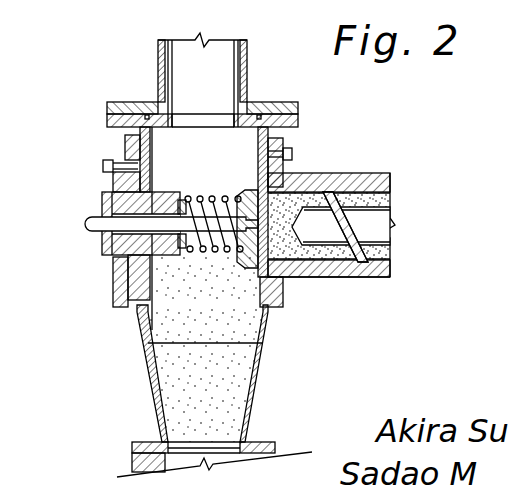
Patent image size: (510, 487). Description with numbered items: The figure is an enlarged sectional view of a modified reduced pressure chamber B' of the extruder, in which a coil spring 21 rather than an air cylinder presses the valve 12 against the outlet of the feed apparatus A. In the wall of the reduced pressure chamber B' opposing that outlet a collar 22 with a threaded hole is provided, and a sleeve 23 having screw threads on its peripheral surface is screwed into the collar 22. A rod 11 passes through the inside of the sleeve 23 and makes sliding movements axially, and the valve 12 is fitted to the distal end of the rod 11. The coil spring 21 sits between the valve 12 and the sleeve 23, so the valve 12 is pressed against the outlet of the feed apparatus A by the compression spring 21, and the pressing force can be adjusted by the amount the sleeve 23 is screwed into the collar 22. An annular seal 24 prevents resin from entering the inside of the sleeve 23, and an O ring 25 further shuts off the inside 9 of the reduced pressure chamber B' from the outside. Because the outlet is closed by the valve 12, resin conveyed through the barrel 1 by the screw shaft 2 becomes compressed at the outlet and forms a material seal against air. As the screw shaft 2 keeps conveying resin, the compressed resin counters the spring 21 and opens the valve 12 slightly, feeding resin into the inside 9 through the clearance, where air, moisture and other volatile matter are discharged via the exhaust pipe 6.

The barrel 1 is at (349, 198).
The screw shaft 2 is at (365, 202).
The exhaust pipe 6 is at (243, 68).
The inside of the reduced pressure chamber 9 is at (238, 406).
The rod 11 is at (87, 222).
The valve 12 is at (290, 193).
The coil spring 21 is at (226, 193).
The collar 22 is at (113, 265).
The sleeve 23 is at (112, 193).
The annular seal 24 is at (181, 197).
The O ring 25 is at (178, 205).
The feed apparatus A is at (342, 273).
The reduced pressure chamber B' is at (286, 341).